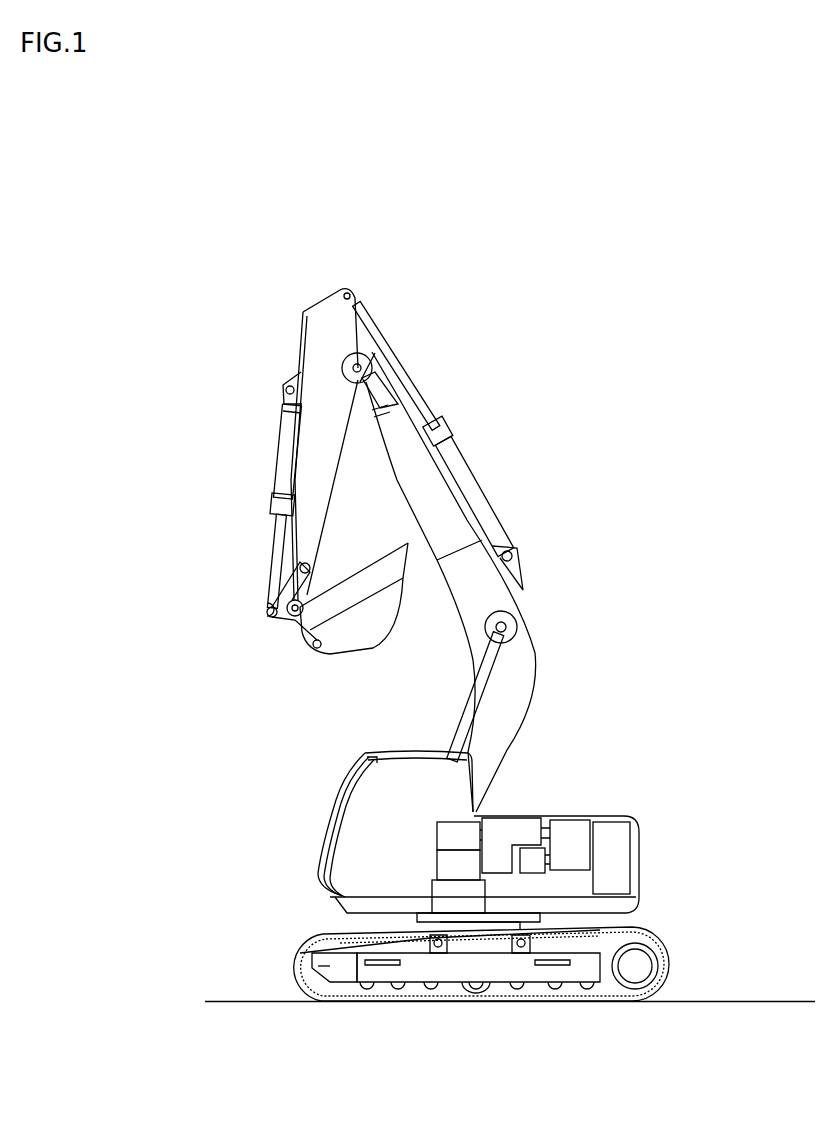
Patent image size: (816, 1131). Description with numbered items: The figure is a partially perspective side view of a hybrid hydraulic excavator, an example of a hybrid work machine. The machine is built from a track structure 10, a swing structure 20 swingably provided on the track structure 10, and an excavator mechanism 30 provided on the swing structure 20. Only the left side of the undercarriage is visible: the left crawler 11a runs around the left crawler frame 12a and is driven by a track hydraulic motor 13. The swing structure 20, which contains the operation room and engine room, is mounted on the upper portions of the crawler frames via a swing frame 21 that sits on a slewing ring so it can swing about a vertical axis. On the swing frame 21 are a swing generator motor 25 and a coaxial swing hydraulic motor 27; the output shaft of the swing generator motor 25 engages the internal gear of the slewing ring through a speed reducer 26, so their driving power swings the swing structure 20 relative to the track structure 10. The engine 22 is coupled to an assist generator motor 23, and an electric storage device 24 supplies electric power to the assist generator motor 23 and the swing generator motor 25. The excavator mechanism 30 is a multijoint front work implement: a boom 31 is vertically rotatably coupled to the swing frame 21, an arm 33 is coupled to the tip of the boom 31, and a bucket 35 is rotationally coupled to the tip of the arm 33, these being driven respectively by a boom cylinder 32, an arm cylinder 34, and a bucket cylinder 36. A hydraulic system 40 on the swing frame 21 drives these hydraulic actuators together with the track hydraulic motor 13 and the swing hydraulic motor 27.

The track structure 10 is at (300, 927).
The crawler 11a is at (670, 953).
The crawler frame 12a is at (460, 963).
The track hydraulic motor 13 is at (633, 972).
The swing structure 20 is at (330, 786).
The swing frame 21 is at (638, 894).
The engine 22 is at (580, 820).
The assist generator motor 23 is at (528, 863).
The electric storage device 24 is at (632, 823).
The swing generator motor 25 is at (437, 857).
The speed reducer 26 is at (440, 890).
The swing hydraulic motor 27 is at (437, 826).
The excavator mechanism 30 is at (468, 380).
The boom 31 is at (523, 654).
The boom cylinder 32 is at (472, 710).
The arm 33 is at (313, 340).
The arm cylinder 34 is at (460, 477).
The bucket 35 is at (370, 643).
The bucket cylinder 36 is at (282, 446).
The hydraulic system 40 is at (518, 816).